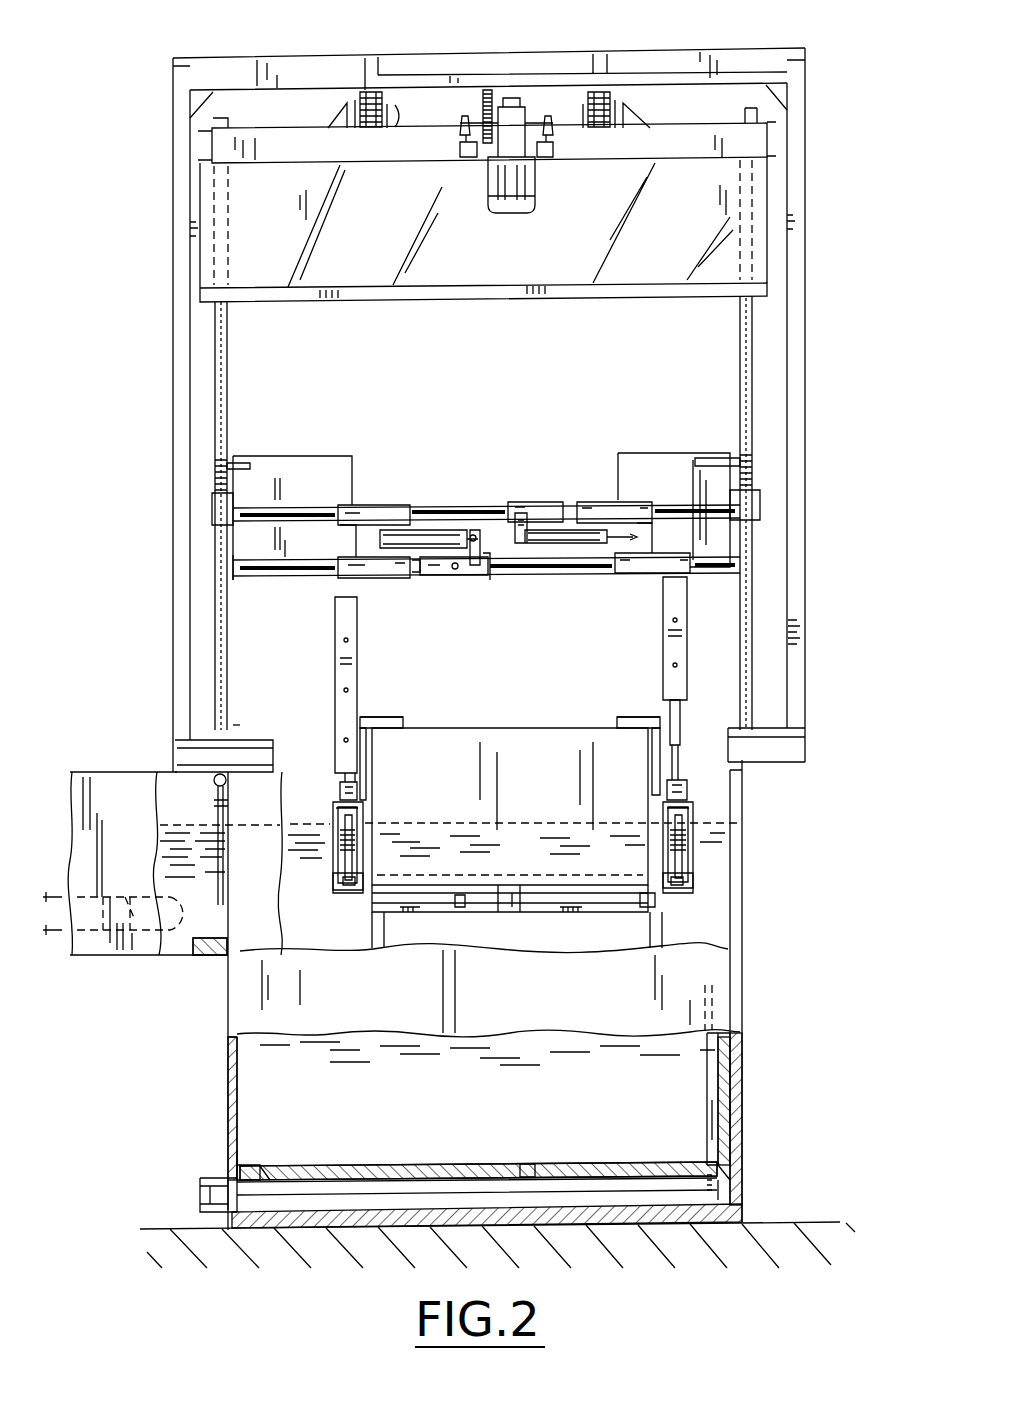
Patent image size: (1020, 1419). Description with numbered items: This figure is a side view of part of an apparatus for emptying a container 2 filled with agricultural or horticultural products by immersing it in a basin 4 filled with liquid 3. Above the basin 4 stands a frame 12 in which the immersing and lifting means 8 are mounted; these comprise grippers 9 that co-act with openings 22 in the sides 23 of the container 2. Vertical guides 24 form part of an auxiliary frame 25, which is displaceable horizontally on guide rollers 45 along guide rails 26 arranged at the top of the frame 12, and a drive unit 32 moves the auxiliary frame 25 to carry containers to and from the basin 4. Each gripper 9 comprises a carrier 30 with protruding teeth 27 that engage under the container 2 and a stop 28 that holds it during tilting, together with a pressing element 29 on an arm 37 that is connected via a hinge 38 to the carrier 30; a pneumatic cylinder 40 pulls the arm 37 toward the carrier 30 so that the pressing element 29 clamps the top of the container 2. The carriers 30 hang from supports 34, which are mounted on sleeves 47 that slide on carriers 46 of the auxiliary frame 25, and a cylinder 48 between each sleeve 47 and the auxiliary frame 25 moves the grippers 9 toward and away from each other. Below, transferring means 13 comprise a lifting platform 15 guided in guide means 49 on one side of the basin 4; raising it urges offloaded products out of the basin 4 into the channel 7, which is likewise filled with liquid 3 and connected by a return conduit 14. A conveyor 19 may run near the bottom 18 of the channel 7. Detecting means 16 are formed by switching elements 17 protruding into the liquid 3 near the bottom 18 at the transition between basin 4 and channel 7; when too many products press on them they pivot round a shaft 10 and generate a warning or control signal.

The container 2 is at (540, 736).
The liquid 3 is at (190, 832).
The basin 4 is at (744, 932).
The channel 7 is at (112, 863).
The immersing and lifting means 8 is at (778, 442).
The grippers 9 is at (454, 712).
The shaft 10 is at (256, 704).
The frame 12 is at (860, 550).
The transferring means 13 is at (372, 1140).
The return conduit 14 is at (216, 1178).
The lifting platform 15 is at (492, 1165).
The detecting means 16 is at (213, 790).
The switching elements 17 is at (226, 872).
The bottom of channel 18 is at (212, 960).
The conveyor 19 is at (100, 957).
The openings 22 is at (622, 908).
The sides of container 23 is at (372, 948).
The vertical guides 24 is at (228, 394).
The auxiliary frame 25 is at (413, 302).
The guide rails 26 is at (587, 95).
The teeth 27 is at (655, 900).
The stop 28 is at (460, 908).
The pressing element 29 is at (397, 717).
The carriers 30 is at (345, 893).
The drive unit 32 is at (533, 182).
The supports 34 is at (348, 678).
The arm 37 is at (367, 760).
The hinge 38 is at (368, 790).
The cylinder 40 is at (356, 845).
The guide rollers 45 is at (360, 95).
The carriers of auxiliary frame 46 is at (300, 520).
The sleeves 47 is at (384, 505).
The cylinder 48 is at (440, 530).
The guide means 49 is at (742, 1108).